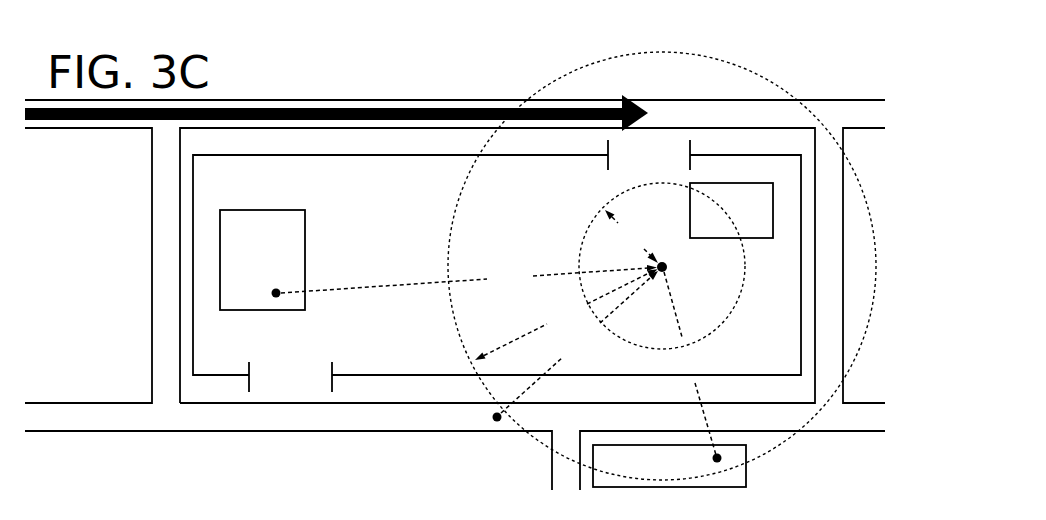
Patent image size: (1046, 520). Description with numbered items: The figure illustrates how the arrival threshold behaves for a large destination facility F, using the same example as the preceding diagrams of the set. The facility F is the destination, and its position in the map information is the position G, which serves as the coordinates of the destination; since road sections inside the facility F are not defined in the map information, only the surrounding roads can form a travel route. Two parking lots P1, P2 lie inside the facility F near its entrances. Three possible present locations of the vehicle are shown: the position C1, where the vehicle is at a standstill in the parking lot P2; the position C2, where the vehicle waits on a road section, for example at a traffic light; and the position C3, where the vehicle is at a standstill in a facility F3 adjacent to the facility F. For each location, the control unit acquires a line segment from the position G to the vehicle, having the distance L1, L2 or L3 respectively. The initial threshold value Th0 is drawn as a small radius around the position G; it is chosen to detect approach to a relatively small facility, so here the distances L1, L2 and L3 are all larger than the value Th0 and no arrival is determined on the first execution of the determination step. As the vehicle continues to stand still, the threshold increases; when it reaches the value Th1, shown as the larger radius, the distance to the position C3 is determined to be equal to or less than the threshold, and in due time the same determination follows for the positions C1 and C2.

The facility F is at (230, 193).
The facility adjacent to the facility F F3 is at (630, 477).
The parking lot P1 is at (731, 210).
The parking lot P2 is at (262, 260).
The position C1 is at (332, 259).
The position C2 is at (461, 445).
The position C3 is at (770, 472).
The position G is at (722, 308).
The distance L1 is at (469, 278).
The distance L2 is at (579, 342).
The distance L3 is at (690, 363).
The initial value of the threshold Th0 is at (631, 234).
The value of the threshold Th1 is at (566, 314).